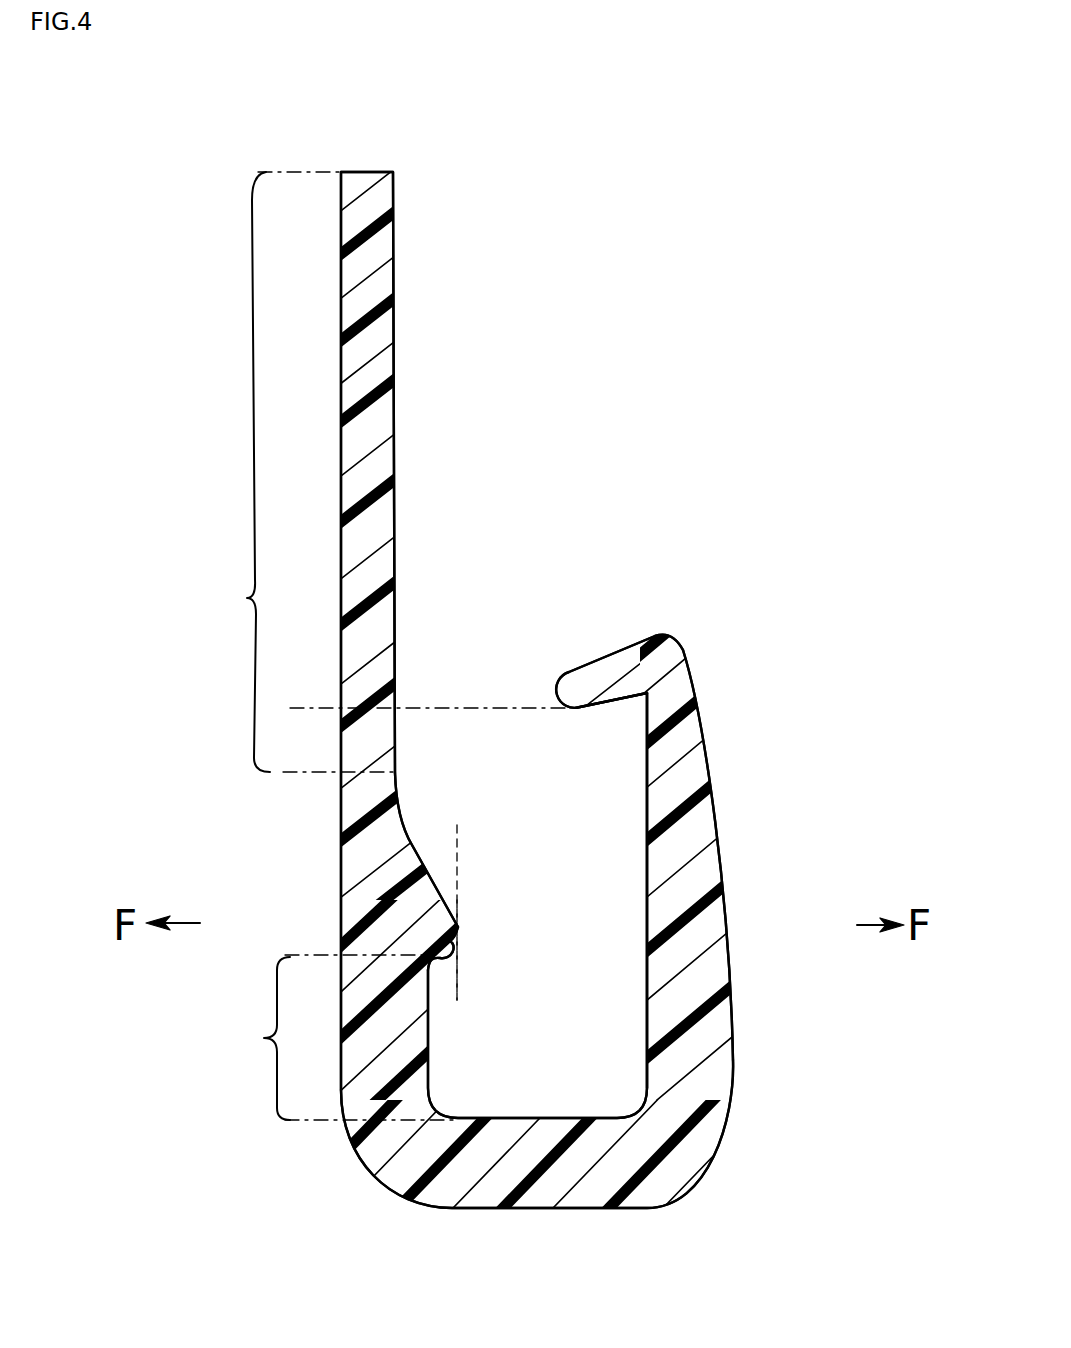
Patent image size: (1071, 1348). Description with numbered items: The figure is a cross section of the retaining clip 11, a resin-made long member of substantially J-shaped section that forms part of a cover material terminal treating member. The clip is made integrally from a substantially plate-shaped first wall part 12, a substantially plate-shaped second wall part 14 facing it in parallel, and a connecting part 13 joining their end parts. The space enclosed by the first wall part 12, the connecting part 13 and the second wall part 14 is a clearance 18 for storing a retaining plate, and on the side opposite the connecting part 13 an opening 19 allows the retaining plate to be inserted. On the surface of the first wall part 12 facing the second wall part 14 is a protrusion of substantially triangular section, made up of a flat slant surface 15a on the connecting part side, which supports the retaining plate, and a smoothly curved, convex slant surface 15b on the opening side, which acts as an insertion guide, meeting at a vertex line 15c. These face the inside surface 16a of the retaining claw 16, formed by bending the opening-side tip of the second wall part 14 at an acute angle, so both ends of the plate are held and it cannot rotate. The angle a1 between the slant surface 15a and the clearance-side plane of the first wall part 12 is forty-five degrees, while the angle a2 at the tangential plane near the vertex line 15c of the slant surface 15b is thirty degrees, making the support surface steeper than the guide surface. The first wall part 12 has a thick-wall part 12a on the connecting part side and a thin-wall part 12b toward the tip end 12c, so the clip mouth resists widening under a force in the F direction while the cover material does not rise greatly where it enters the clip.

The retaining clip 11 is at (607, 343).
The first wall part 12 is at (383, 348).
The thick-wall part 12a is at (317, 1037).
The thin-wall part 12b is at (272, 472).
The tip end 12c is at (357, 170).
The connecting part 13 is at (597, 1190).
The second wall part 14 is at (713, 838).
The slant surface 15a is at (449, 936).
The slant surface 15b is at (411, 840).
The vertex line 15c is at (458, 924).
The retaining claw 16 is at (613, 662).
The inside surface 16a is at (617, 697).
The clearance 18 is at (580, 1080).
The opening 19 is at (488, 706).
The angle α1 a1 is at (441, 952).
The angle α2 a2 is at (457, 893).